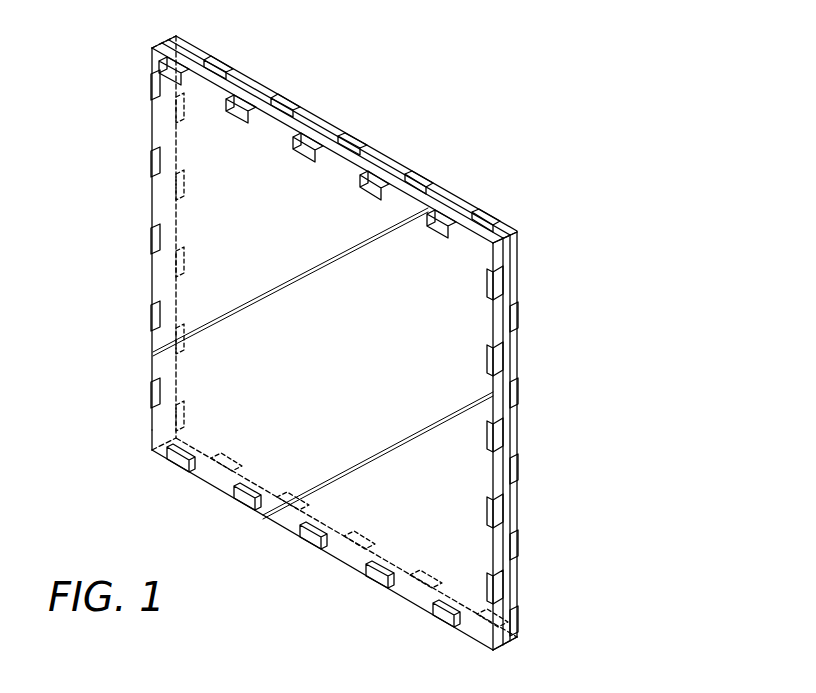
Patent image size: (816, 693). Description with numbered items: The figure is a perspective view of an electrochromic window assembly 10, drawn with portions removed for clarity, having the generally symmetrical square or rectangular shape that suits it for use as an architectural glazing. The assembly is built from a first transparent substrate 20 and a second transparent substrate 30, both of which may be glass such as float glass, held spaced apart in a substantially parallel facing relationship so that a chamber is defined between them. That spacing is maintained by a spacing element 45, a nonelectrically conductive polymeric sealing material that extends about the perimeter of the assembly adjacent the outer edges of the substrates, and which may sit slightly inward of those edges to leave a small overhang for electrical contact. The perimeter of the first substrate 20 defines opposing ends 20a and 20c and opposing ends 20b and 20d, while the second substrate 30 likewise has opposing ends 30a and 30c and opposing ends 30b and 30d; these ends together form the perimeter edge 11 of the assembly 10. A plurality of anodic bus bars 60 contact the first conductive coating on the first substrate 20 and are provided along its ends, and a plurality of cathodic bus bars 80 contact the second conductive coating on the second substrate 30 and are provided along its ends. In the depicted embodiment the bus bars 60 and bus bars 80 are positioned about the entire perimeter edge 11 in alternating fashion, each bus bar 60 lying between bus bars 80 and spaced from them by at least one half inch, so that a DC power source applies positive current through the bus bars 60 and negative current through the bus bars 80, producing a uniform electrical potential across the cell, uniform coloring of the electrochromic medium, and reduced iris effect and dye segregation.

The electrochromic window assembly 10 is at (574, 137).
The perimeter edge 11 is at (458, 198).
The first transparent substrate 20 is at (150, 444).
The end of first substrate 20a is at (272, 100).
The end of first substrate 20b is at (152, 293).
The end of first substrate 20c is at (350, 567).
The end of first substrate 20d is at (505, 305).
The second transparent substrate 30 is at (519, 246).
The end of second substrate 30a is at (390, 160).
The end of second substrate 30b is at (176, 366).
The end of second substrate 30c is at (406, 572).
The end of second substrate 30d is at (518, 360).
The spacing element 45 is at (154, 47).
The bus bars 60 is at (252, 100).
The bus bars 80 is at (353, 142).